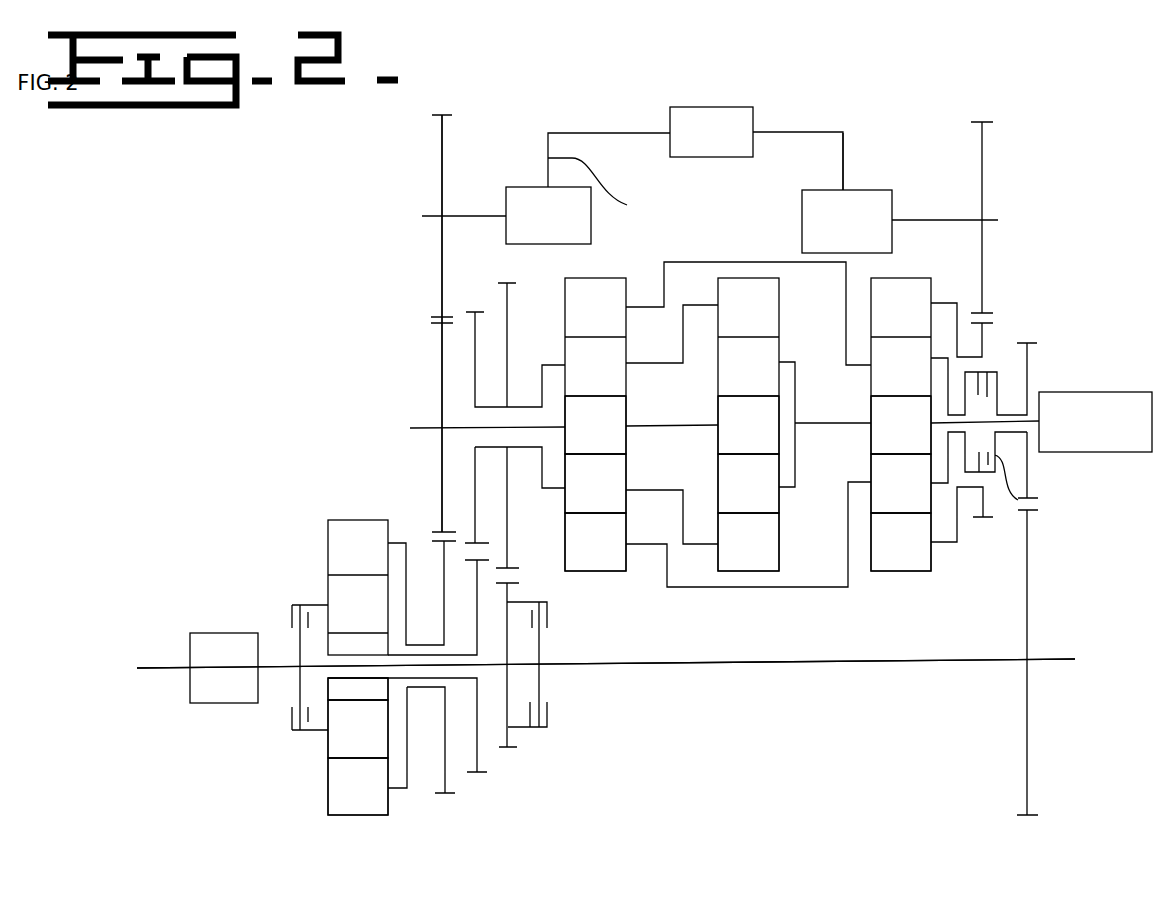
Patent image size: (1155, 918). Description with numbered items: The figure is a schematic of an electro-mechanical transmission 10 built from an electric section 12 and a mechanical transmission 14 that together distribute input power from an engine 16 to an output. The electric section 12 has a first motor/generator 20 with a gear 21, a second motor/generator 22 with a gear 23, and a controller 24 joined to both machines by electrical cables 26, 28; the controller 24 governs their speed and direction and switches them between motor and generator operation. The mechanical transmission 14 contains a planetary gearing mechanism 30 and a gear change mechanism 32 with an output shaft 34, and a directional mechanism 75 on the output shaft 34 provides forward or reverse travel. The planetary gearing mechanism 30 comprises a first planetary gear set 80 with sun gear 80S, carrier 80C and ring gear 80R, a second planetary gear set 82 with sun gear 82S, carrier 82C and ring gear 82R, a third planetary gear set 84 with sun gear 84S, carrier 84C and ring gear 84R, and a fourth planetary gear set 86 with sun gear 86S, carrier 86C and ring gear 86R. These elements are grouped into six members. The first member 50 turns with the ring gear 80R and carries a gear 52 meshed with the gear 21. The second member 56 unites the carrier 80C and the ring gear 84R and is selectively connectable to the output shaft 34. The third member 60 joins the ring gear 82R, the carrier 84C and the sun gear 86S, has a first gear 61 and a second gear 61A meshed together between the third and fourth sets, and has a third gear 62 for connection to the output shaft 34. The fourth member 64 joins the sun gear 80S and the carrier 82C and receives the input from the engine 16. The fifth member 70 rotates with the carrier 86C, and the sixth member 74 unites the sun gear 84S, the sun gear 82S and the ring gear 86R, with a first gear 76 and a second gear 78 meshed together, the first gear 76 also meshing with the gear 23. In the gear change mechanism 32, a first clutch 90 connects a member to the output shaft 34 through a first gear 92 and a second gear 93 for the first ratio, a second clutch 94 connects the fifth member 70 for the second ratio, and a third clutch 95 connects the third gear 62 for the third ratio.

The electro-mechanical transmission 10 is at (1031, 143).
The electric section 12 is at (545, 103).
The mechanical transmission 14 is at (1080, 240).
The engine 16 is at (1092, 392).
The first motor/generator 20 is at (866, 190).
The gear 21 is at (982, 242).
The second motor/generator 22 is at (522, 187).
The gear 23 is at (442, 228).
The controller 24 is at (712, 158).
The electrical cable 26 is at (843, 158).
The electrical cable 28 is at (600, 188).
The planetary gearing mechanism 30 is at (378, 489).
The gear change mechanism 32 is at (1042, 690).
The output shaft 34 is at (942, 660).
The first member 50 is at (931, 303).
The gear 52 is at (985, 345).
The second member 56 is at (955, 325).
The third member 60 is at (565, 365).
The first gear 61 is at (473, 330).
The second gear 61A is at (520, 578).
The third gear 62 is at (508, 505).
The fourth member 64 is at (1033, 427).
The fifth member 70 is at (308, 727).
The sixth member 74 is at (507, 427).
The directional mechanism 75 is at (208, 633).
The first gear 76 is at (442, 352).
The second gear 78 is at (442, 548).
The first planetary gear set 80 is at (903, 574).
The sun gear 80S is at (871, 400).
The carrier 80C is at (871, 475).
The ring gear 80R is at (931, 545).
The second planetary gear set 82 is at (743, 574).
The sun gear 82S is at (718, 430).
The carrier 82C is at (779, 490).
The ring gear 82R is at (779, 535).
The third planetary gear set 84 is at (628, 574).
The sun gear 84S is at (626, 412).
The carrier 84C is at (626, 470).
The ring gear 84R is at (626, 535).
The fourth planetary gear set 86 is at (329, 822).
The sun gear 86S is at (328, 687).
The carrier 86C is at (328, 745).
The ring gear 86R is at (390, 805).
The first clutch 90 is at (1040, 508).
The first gear 92 is at (1028, 472).
The second gear 93 is at (1028, 573).
The second clutch 94 is at (292, 605).
The third clutch 95 is at (547, 610).